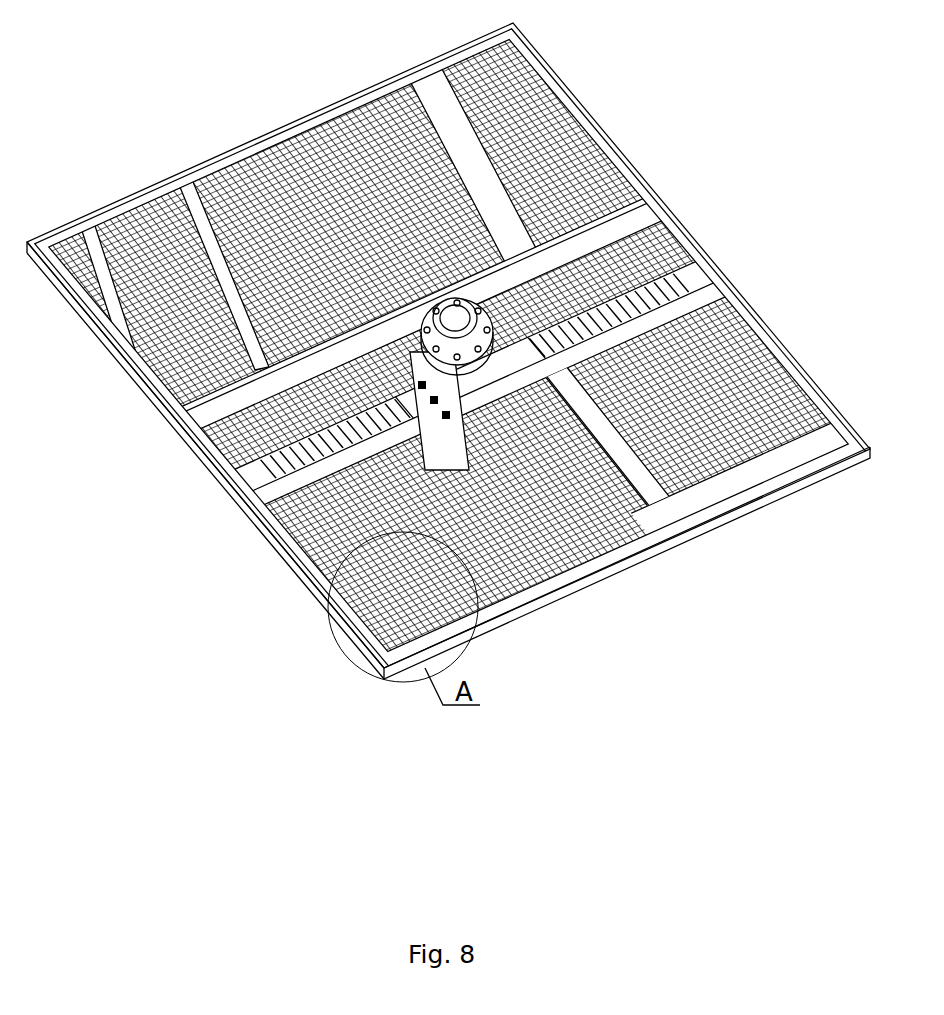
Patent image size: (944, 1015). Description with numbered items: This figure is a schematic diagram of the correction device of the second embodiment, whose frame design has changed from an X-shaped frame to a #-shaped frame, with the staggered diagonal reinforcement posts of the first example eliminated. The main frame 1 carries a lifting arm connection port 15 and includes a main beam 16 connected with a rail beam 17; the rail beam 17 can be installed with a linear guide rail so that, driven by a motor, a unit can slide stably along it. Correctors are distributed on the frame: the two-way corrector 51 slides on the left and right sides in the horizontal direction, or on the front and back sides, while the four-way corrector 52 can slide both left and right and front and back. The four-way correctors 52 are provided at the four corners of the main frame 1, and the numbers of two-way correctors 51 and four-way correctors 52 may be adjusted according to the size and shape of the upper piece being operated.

The main frame 1 is at (717, 263).
The lifting arm connection port 15 is at (398, 336).
The main beam 16 is at (565, 353).
The rail beam 17 is at (582, 568).
The two-way corrector 51 is at (623, 560).
The four-way corrector 52 is at (302, 558).